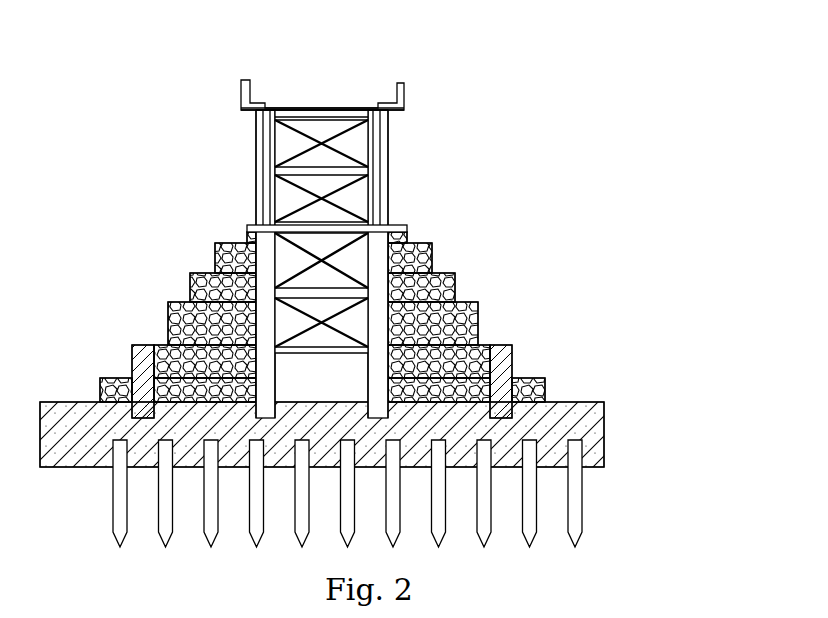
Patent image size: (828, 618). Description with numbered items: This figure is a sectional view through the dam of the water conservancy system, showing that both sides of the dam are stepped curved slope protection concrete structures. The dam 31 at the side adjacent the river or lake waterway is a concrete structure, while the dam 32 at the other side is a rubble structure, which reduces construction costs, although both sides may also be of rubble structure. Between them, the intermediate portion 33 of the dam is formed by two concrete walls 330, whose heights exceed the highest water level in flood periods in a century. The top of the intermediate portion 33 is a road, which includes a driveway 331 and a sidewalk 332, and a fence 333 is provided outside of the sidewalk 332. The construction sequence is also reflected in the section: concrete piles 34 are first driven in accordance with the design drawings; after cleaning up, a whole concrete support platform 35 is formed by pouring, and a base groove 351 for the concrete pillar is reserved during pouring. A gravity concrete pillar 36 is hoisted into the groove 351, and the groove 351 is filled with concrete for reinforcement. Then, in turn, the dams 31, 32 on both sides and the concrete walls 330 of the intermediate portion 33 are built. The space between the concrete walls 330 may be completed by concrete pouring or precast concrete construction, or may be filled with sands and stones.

The dam 31 is at (157, 305).
The dam 32 is at (492, 328).
The intermediate portion 33 is at (397, 173).
The concrete wall 330 is at (238, 244).
The driveway 331 is at (322, 108).
The sidewalk 332 is at (388, 108).
The fence 333 is at (404, 98).
The concrete pile 34 is at (573, 507).
The concrete support platform 35 is at (578, 422).
The base groove 351 is at (545, 400).
The gravity concrete pillar 36 is at (518, 375).